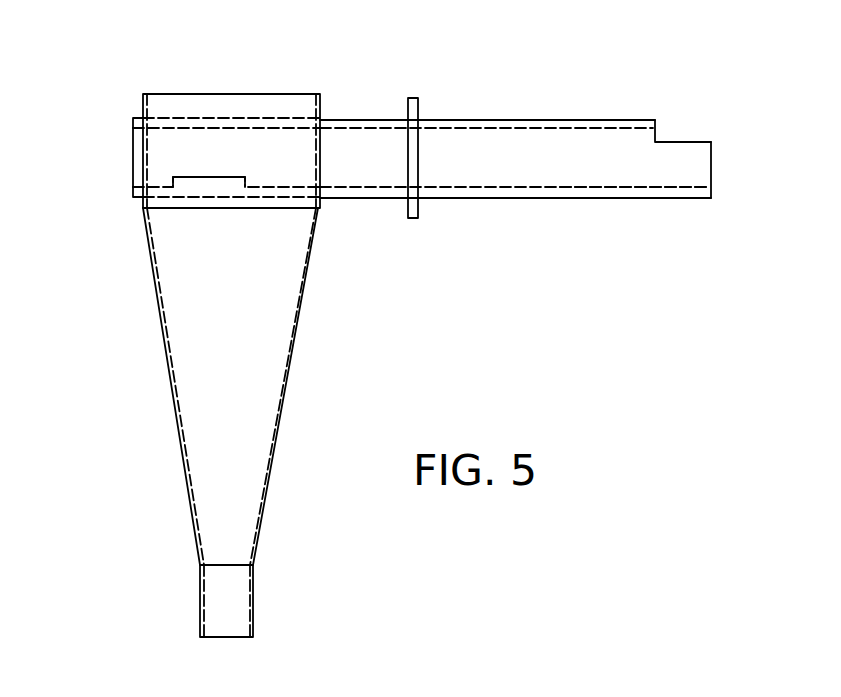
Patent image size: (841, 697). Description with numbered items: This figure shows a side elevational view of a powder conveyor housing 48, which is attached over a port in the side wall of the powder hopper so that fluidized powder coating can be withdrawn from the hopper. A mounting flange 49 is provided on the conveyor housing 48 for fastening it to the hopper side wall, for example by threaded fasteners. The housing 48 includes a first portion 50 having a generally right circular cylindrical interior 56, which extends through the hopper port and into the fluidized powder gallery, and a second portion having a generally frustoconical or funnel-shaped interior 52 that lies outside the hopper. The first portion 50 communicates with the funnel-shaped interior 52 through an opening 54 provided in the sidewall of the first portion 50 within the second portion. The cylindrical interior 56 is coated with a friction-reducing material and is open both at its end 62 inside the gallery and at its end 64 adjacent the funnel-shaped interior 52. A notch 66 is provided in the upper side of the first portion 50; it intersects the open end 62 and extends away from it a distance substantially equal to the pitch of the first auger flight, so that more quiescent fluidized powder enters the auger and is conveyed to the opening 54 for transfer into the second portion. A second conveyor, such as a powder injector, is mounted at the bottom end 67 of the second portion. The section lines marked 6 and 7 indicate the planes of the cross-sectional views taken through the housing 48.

The powder conveyor housing 48 is at (402, 52).
The mounting flange 49 is at (407, 113).
The first portion 50 is at (535, 121).
The funnel-shaped interior 52 is at (310, 246).
The opening 54 is at (196, 180).
The right circular cylindrical interior 56 is at (636, 191).
The end 62 is at (712, 150).
The end 64 is at (131, 136).
The notch 66 is at (659, 141).
The bottom end 67 is at (200, 607).
The section line 6- 6 is at (682, 56).
The section line 7- 7 is at (68, 112).